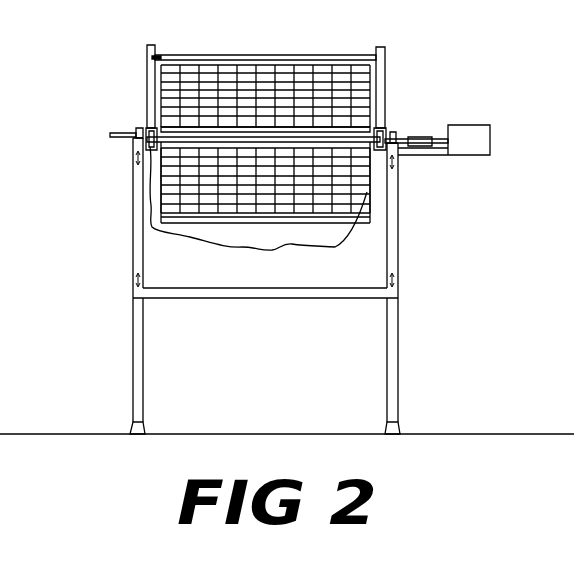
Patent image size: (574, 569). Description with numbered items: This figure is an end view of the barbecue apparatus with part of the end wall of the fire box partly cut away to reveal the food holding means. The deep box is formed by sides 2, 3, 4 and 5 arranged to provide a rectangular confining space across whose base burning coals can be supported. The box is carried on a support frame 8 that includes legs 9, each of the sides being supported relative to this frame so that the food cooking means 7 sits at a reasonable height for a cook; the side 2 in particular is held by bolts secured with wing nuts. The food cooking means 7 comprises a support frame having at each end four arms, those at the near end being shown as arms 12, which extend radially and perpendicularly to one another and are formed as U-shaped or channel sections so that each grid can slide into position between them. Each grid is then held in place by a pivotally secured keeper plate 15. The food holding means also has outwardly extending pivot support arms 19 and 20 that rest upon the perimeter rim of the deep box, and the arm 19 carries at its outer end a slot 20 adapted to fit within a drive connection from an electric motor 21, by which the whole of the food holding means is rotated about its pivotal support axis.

The side 2 is at (260, 286).
The side 3 is at (131, 245).
The side 4 is at (273, 253).
The side 5 is at (400, 223).
The food cooking means 7 is at (386, 63).
The support frame 8 is at (143, 319).
The legs 9 is at (142, 357).
The arms 12 is at (145, 98).
The keeper plate 15 is at (158, 54).
The pivot support arm 19 is at (429, 138).
The pivot support arm 20 is at (130, 137).
The electric motor 21 is at (474, 126).